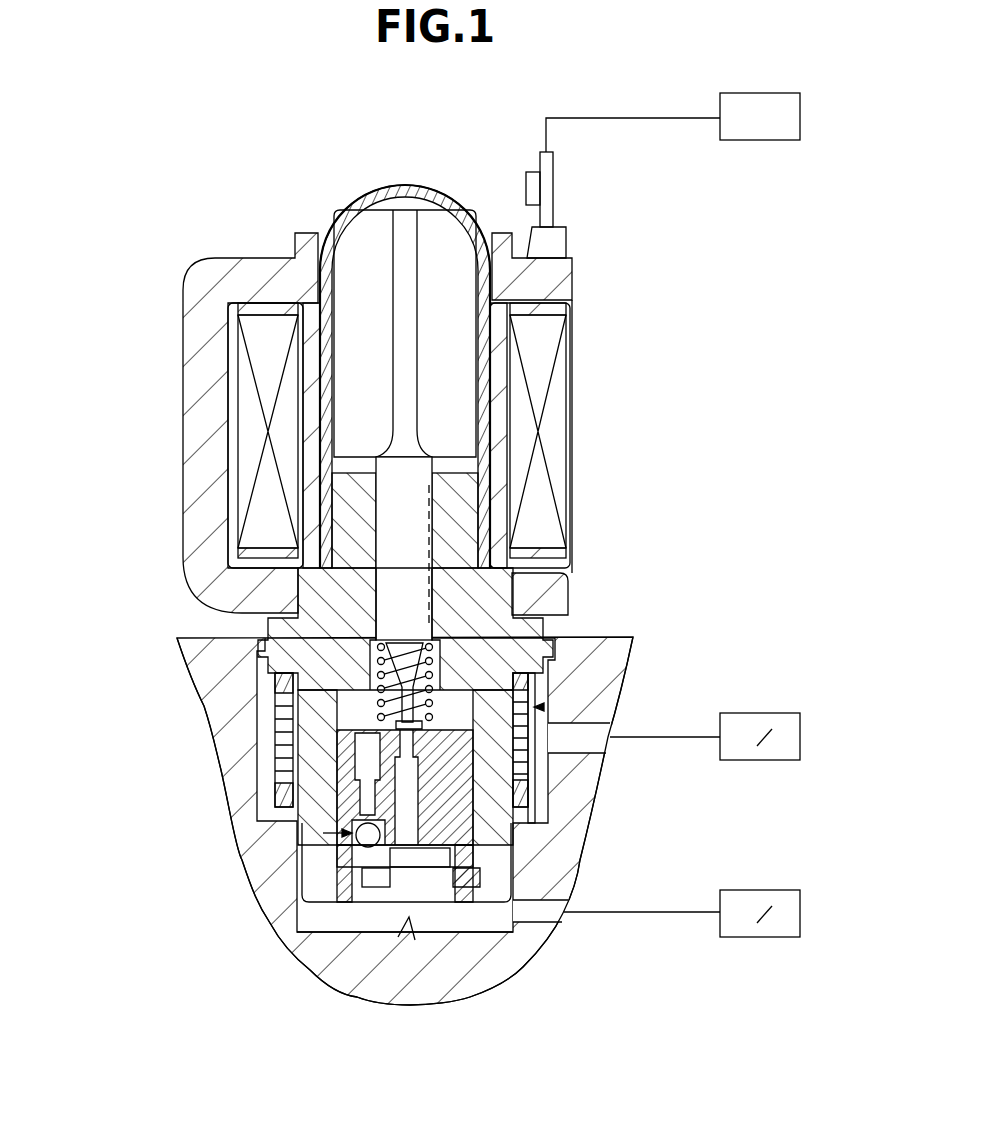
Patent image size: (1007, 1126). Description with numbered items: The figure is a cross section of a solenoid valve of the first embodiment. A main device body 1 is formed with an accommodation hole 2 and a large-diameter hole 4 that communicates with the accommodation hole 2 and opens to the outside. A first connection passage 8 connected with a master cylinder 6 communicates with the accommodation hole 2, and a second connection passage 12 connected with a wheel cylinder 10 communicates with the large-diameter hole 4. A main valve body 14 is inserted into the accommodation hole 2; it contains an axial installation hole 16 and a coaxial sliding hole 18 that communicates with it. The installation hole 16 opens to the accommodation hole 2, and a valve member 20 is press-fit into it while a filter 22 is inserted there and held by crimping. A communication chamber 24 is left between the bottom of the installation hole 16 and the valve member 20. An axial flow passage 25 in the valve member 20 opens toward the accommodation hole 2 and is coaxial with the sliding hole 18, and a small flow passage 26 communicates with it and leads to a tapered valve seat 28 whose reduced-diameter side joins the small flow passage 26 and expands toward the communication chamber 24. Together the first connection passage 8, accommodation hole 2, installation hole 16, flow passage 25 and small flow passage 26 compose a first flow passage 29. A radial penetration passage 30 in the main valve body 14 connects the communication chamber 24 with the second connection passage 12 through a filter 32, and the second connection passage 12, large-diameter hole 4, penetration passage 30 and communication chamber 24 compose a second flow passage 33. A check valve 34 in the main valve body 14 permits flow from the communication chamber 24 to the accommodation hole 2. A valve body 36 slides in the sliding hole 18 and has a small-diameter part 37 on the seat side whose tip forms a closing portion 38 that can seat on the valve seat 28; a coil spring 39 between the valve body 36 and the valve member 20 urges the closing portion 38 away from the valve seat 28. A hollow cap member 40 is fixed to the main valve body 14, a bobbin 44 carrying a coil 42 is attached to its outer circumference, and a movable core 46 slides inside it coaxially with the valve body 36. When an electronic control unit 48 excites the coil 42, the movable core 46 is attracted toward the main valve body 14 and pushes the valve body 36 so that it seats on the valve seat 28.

The main device body 1 is at (323, 974).
The accommodation hole 2 is at (310, 933).
The large-diameter hole 4 is at (282, 811).
The master cylinder 6 is at (767, 900).
The first connection passage 8 is at (535, 910).
The wheel cylinder 10 is at (767, 722).
The second connection passage 12 is at (556, 737).
The main valve body 14 is at (503, 627).
The installation hole 16 is at (410, 830).
The sliding hole 18 is at (427, 487).
The valve member 20 is at (525, 955).
The filter 22 is at (306, 916).
The communication chamber 24 is at (470, 667).
The flow passage 25 is at (485, 852).
The small flow passage 26 is at (460, 790).
The valve seat 28 is at (430, 745).
The first flow passage 29 is at (409, 917).
The penetration passage 30 is at (497, 700).
The filter 32 is at (253, 673).
The second flow passage 33 is at (544, 707).
The check valve 34 is at (323, 833).
The valve body 36 is at (403, 537).
The small-diameter part 37 is at (282, 689).
The closing portion 38 is at (289, 733).
The coil spring 39 is at (296, 624).
The cap member 40 is at (453, 198).
The coil 42 is at (260, 342).
The bobbin 44 is at (267, 305).
The movable core 46 is at (442, 353).
The electronic control unit (ECU) 48 is at (762, 100).